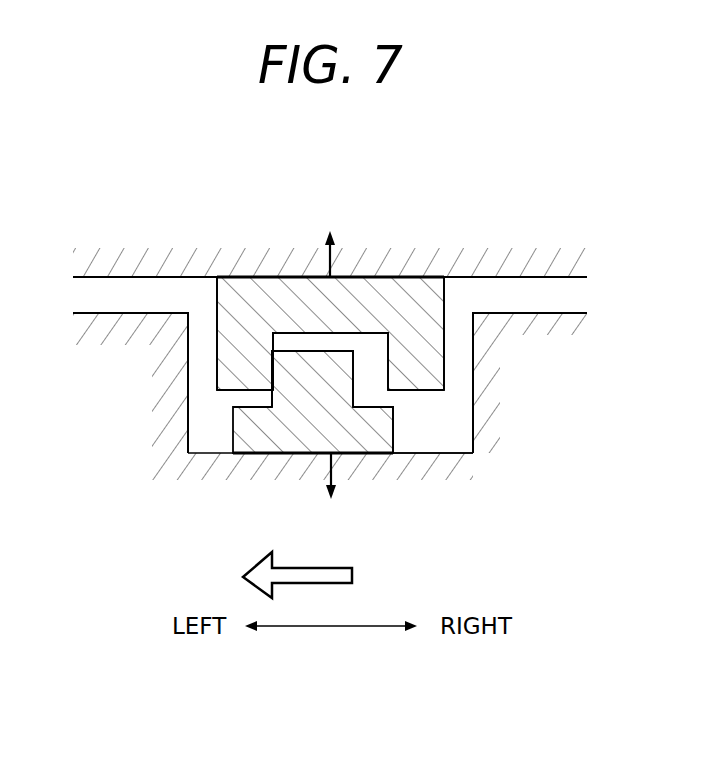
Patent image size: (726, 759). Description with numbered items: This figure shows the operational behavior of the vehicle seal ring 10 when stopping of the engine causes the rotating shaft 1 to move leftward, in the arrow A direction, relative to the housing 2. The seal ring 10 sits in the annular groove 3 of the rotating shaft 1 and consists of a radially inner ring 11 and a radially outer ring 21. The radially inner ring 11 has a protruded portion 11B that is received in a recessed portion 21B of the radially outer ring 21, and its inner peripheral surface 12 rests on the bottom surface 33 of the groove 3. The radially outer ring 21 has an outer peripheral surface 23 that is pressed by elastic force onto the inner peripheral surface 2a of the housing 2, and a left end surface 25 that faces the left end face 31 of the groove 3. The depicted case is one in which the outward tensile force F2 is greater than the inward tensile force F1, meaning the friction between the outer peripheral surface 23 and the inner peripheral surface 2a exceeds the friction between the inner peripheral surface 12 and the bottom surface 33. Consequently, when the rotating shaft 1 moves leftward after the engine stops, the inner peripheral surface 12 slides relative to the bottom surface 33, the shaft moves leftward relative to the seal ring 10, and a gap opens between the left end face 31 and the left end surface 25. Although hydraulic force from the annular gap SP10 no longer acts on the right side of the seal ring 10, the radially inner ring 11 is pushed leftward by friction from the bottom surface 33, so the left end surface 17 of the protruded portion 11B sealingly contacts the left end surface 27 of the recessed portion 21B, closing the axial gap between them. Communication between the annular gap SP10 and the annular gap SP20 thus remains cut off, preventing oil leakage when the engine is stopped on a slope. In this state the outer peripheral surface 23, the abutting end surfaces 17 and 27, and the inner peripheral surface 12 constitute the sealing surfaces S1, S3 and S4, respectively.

The rotating shaft 1 is at (513, 341).
The housing 2 is at (512, 238).
The inner peripheral surface of the housing 2a is at (455, 279).
The groove 3 is at (440, 416).
The seal ring 10 is at (485, 458).
The radially inner ring 11 is at (246, 461).
The protruded portion 11B is at (333, 367).
The inner peripheral surface of the radially inner ring 12 is at (363, 453).
The left end surface of the protruded portion 17 is at (277, 382).
The radially outer ring 21 is at (253, 268).
The recessed portion 21B is at (357, 343).
The outer peripheral surface of the radially outer ring 23 is at (407, 277).
The left end surface of the radially outer ring 25 is at (217, 313).
The left end surface of the recessed portion 27 is at (276, 383).
The left end face of the groove 31 is at (198, 372).
The bottom surface of the groove 33 is at (440, 453).
The sealing surface S1 is at (236, 276).
The sealing surface S3 is at (297, 350).
The sealing surface S4 is at (378, 453).
The annular gap SP10 is at (557, 290).
The annular gap SP20 is at (83, 285).
The inward tensile force F1 is at (332, 487).
The outward tensile force F2 is at (329, 243).
The arrow A direction A is at (285, 575).